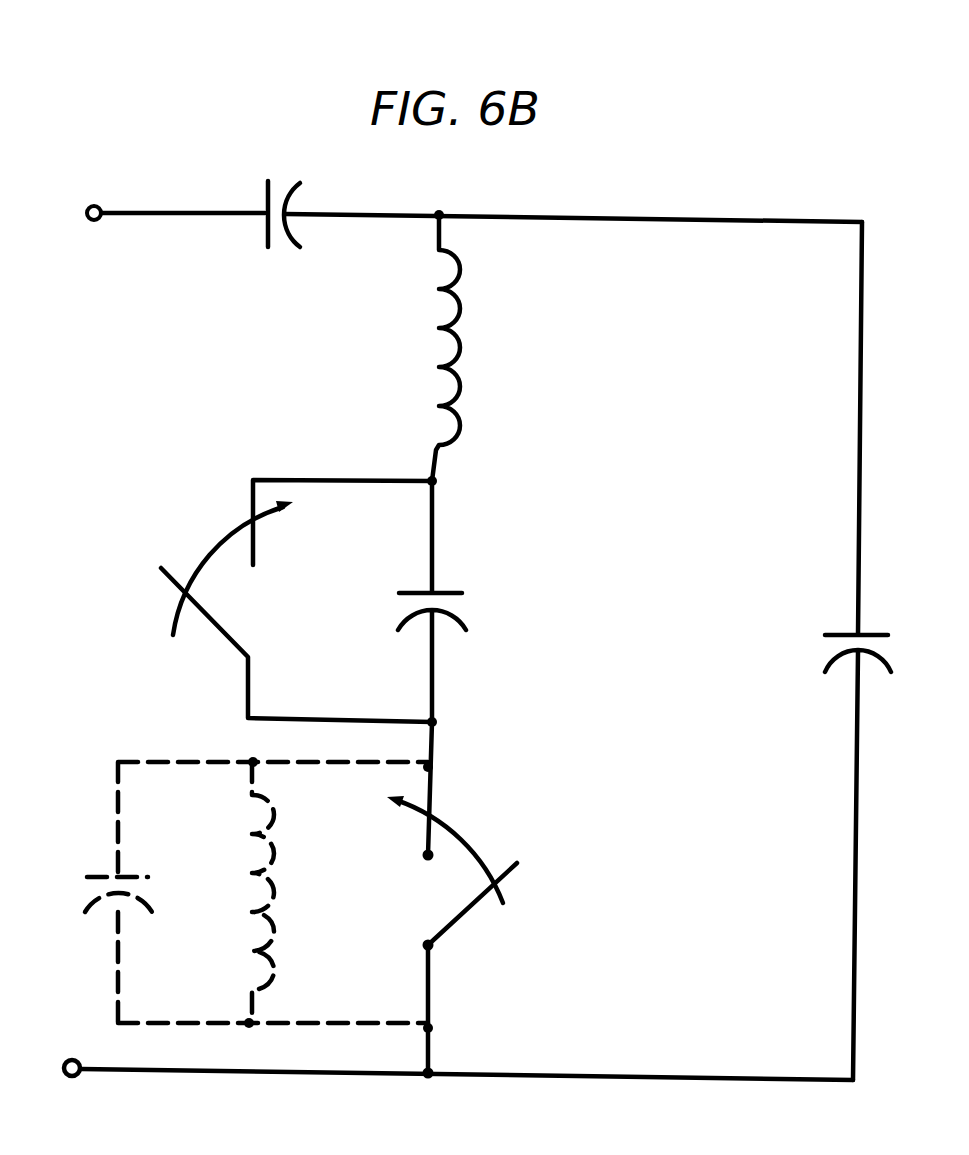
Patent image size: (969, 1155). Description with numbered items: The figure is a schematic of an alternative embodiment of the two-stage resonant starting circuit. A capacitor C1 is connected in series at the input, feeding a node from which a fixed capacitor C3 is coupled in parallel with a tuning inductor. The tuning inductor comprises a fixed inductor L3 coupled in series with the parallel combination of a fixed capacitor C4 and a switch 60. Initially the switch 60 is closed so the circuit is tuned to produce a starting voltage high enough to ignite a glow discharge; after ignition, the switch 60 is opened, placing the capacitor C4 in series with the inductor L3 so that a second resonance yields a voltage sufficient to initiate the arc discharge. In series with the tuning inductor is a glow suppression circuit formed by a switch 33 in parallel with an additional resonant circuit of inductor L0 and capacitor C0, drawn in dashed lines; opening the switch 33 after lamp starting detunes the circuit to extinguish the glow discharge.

The switch 60 is at (220, 636).
The switch 33 is at (447, 938).
The capacitor C1 is at (282, 247).
The fixed inductor L3 is at (466, 348).
The fixed capacitor C4 is at (453, 601).
The fixed capacitor C3 is at (832, 651).
The capacitor of additional resonant circuit C0 is at (135, 899).
The inductor of additional resonant circuit L0 is at (286, 892).